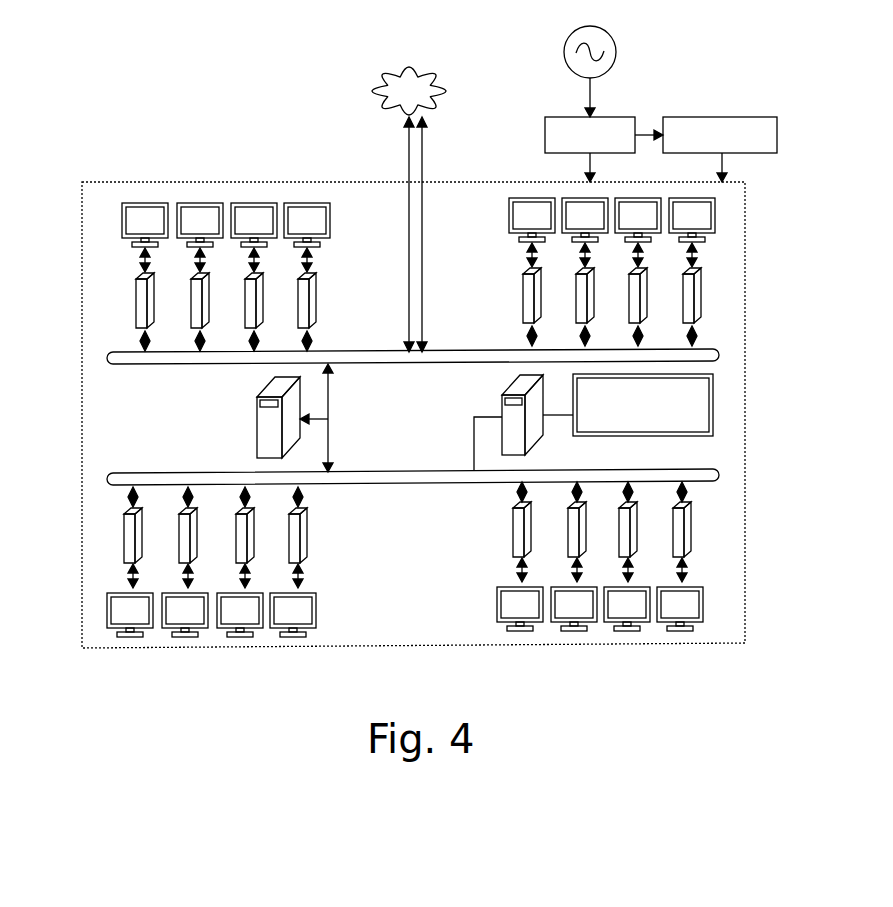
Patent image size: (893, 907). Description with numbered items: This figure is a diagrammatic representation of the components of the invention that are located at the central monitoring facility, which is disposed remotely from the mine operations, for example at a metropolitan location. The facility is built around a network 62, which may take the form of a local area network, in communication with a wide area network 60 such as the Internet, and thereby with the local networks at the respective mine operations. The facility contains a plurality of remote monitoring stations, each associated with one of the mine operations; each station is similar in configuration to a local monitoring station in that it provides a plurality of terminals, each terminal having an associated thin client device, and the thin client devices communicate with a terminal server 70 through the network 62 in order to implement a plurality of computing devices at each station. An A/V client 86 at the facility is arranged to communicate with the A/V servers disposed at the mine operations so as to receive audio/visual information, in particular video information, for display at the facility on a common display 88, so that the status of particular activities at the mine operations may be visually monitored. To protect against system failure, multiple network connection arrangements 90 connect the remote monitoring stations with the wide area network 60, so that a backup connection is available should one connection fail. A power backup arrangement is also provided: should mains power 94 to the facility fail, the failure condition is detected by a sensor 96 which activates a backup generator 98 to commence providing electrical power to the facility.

The wide area network 60 is at (414, 70).
The network 62 is at (443, 353).
The terminal server 70 is at (265, 423).
The A/V client 86 is at (513, 432).
The common display 88 is at (713, 415).
The network connection arrangement 90 is at (408, 163).
The mains power 94 is at (604, 33).
The sensor 96 is at (608, 117).
The backup generator 98 is at (723, 117).